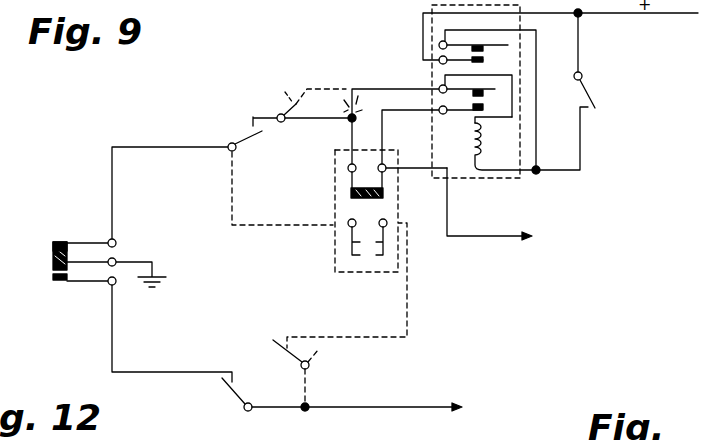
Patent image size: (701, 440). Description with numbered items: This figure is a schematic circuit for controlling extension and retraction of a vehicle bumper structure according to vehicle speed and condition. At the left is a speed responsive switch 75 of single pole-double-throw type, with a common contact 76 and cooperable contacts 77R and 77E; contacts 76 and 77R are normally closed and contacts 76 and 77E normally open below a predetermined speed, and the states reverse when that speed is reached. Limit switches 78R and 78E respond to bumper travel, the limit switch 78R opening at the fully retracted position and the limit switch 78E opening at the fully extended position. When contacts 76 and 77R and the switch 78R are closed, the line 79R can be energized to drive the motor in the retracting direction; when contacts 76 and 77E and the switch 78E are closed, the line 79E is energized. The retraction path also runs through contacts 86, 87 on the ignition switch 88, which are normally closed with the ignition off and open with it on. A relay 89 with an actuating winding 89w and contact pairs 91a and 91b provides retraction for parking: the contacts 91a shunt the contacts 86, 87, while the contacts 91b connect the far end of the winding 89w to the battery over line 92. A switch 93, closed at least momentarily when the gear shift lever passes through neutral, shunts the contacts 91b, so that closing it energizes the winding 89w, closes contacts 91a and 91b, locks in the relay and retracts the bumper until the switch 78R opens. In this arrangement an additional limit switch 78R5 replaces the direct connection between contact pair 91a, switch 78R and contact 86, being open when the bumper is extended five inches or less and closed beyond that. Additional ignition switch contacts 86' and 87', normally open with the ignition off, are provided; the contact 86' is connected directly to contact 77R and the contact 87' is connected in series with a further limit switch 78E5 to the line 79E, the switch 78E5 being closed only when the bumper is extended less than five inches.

The speed responsive switch 75 is at (81, 222).
The common contact 76 is at (53, 258).
The cooperable contact 77R is at (53, 245).
The cooperable contact 77E is at (53, 278).
The limit switch 78R is at (240, 136).
The limit switch 78R5 is at (298, 94).
The limit switch 78E is at (238, 392).
The limit switch 78E5 is at (322, 371).
The line 79R is at (488, 237).
The line 79E is at (383, 410).
The contact 86 is at (322, 177).
The contact 86' is at (318, 253).
The contact 87 is at (412, 192).
The contact 87' is at (412, 253).
The ignition switch 88 is at (326, 236).
The relay 89 is at (426, 73).
The actuating winding 89w is at (470, 150).
The pair of contacts 91a is at (487, 100).
The pair of contacts 91b is at (488, 53).
The line 92 is at (580, 17).
The switch 93 is at (597, 100).